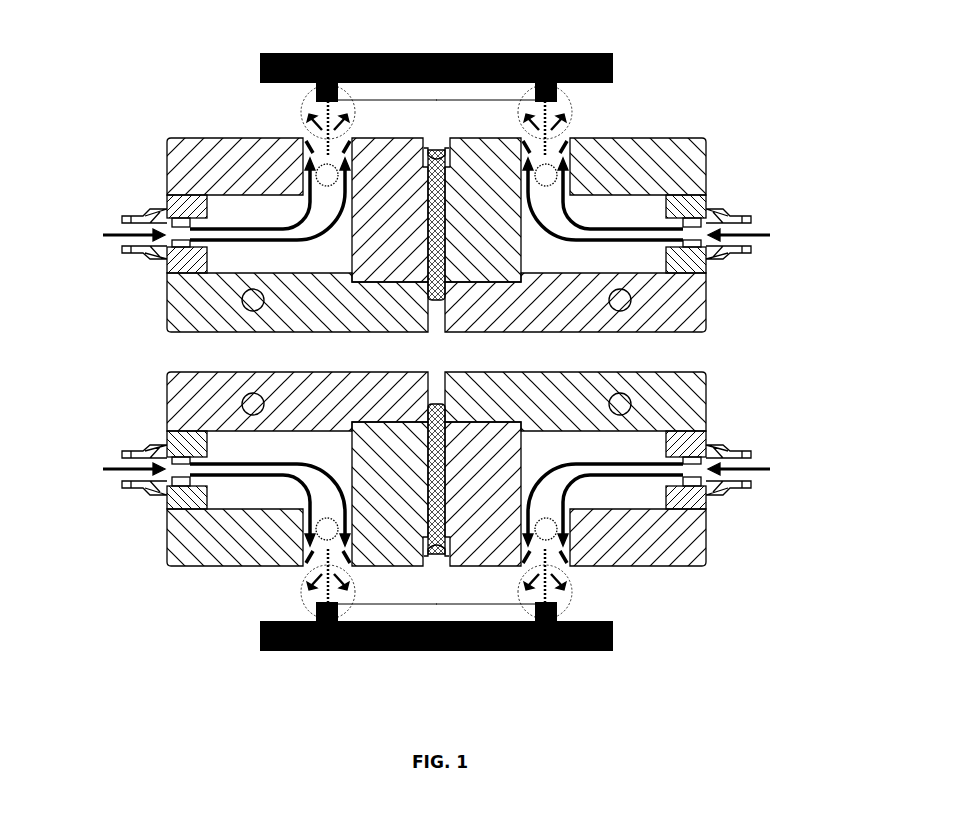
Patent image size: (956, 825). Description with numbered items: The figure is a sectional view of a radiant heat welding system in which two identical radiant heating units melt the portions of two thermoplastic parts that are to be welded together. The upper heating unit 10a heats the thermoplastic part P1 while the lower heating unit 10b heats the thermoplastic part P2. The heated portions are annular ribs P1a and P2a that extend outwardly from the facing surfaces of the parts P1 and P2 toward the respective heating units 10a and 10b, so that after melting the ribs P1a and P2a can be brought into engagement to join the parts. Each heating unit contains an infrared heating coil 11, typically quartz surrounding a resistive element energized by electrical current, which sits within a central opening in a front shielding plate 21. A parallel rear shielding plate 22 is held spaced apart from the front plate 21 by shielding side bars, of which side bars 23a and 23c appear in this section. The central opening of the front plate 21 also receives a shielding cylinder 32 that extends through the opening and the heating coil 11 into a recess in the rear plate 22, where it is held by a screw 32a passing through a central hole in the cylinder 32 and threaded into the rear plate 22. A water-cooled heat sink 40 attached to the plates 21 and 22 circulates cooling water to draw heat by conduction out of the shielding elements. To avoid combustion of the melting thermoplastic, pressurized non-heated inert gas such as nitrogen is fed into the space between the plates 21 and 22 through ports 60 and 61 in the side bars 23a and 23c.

The thermoplastic part P1 is at (453, 53).
The thermoplastic part P2 is at (425, 651).
The annular rib P1a is at (301, 97).
The annular rib P2a is at (302, 608).
The upper radiant heating unit 10a is at (703, 134).
The lower radiant heating unit 10b is at (685, 569).
The front shielding plate 21 is at (706, 166).
The rear shielding plate 22 is at (706, 305).
The shielding side bar 23a is at (167, 202).
The shielding side bar 23c is at (706, 205).
The shielding cylinder 32 is at (377, 138).
The screw 32a is at (437, 145).
The infrared heating coil 11 is at (554, 170).
The water-cooled heat sink 40 is at (247, 309).
The port 60 is at (122, 244).
The port 61 is at (752, 248).